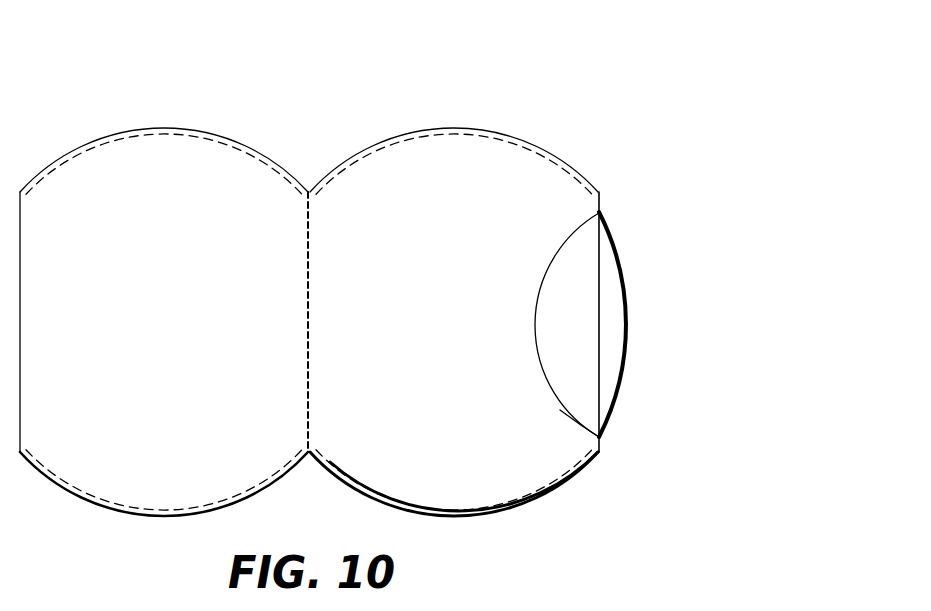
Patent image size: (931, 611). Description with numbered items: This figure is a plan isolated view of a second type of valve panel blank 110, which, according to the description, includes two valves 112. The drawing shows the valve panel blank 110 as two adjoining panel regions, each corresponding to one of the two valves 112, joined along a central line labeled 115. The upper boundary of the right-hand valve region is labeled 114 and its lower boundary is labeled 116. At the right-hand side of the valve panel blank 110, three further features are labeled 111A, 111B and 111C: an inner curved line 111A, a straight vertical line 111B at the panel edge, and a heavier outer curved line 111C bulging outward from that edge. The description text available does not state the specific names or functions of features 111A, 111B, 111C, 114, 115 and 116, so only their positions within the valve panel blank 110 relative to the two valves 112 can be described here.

The valve panel blank 110 is at (478, 68).
The valve flap portion 111A is at (578, 423).
The valve fold line 111B is at (599, 325).
The valve edge 111C is at (620, 268).
The valve 112 is at (177, 334).
The top edge 114 is at (535, 142).
The fold line 115 is at (308, 237).
The bottom edge 116 is at (525, 503).